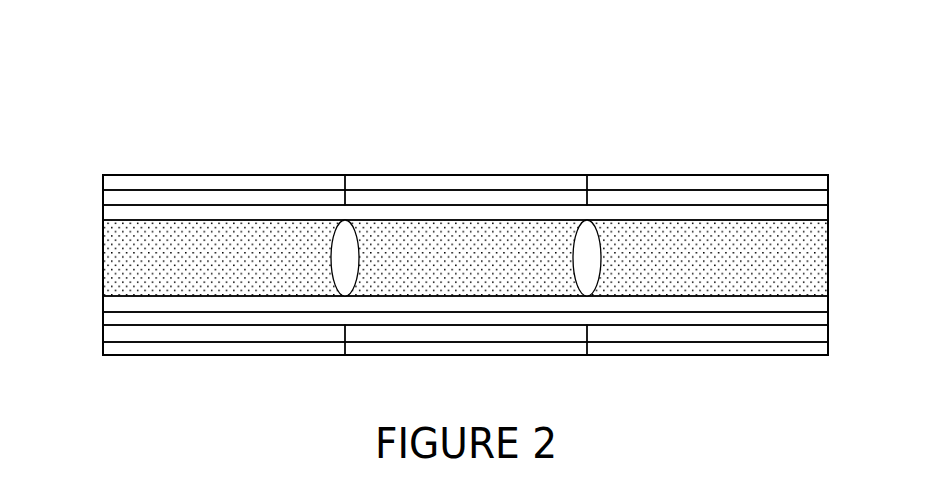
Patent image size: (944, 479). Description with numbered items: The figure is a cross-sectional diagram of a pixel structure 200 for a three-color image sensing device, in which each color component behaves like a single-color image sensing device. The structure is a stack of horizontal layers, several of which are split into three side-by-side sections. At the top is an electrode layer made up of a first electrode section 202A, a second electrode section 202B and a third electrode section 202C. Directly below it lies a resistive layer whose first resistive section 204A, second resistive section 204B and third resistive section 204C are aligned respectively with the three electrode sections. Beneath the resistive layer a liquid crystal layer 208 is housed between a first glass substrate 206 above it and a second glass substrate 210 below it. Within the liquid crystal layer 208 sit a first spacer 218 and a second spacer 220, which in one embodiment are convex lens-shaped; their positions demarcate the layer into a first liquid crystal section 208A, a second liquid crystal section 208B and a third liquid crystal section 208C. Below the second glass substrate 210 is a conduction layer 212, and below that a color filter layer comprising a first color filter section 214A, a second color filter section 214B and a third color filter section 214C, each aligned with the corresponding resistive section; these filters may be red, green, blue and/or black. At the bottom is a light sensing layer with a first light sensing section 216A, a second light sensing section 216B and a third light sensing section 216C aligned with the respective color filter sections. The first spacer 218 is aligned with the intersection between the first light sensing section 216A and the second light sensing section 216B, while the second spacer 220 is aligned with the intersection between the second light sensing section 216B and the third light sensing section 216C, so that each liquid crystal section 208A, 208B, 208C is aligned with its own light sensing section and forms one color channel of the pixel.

The pixel structure 200 is at (487, 81).
The first electrode section 202A is at (178, 173).
The second electrode section 202B is at (420, 173).
The third electrode section 202C is at (661, 173).
The first resistive section 204A is at (269, 188).
The second resistive section 204B is at (511, 188).
The third resistive section 204C is at (753, 188).
The first glass substrate 206 is at (103, 212).
The liquid crystal layer 208 is at (103, 257).
The first liquid crystal section 208A is at (224, 258).
The second liquid crystal section 208B is at (466, 258).
The third liquid crystal section 208C is at (707, 258).
The second glass substrate 210 is at (103, 302).
The conduction layer 212 is at (103, 320).
The first color filter section 214A is at (178, 343).
The second color filter section 214B is at (420, 343).
The third color filter section 214C is at (661, 343).
The first light sensing section 216A is at (268, 356).
The second light sensing section 216B is at (510, 356).
The third light sensing section 216C is at (753, 356).
The first spacer 218 is at (346, 220).
The second spacer 220 is at (589, 220).